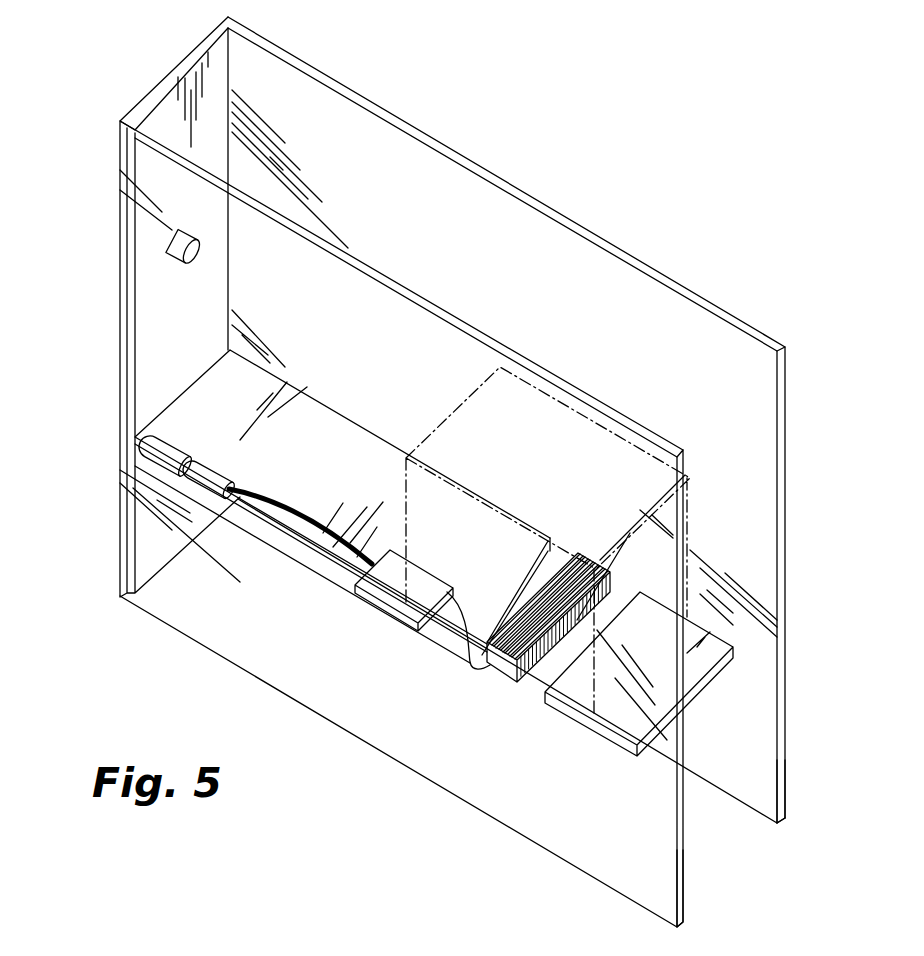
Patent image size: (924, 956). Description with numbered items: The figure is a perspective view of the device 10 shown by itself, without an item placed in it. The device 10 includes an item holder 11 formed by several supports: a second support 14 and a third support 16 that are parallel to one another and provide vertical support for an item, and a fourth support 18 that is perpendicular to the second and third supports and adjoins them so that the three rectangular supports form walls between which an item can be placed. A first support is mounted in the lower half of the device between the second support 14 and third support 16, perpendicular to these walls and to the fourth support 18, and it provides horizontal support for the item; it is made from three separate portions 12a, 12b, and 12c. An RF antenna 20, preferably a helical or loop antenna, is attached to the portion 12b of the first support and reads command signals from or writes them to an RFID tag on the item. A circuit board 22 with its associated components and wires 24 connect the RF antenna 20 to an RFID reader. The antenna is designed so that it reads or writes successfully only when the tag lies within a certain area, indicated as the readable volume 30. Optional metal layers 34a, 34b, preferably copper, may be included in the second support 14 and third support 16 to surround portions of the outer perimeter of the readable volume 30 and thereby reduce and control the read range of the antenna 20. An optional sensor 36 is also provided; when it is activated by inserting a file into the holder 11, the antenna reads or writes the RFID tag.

The device 10 is at (791, 517).
The item holder 11 is at (622, 255).
The first support portion 12a is at (293, 543).
The first support portion 12b is at (503, 675).
The first support portion 12c is at (603, 729).
The second support 14 is at (372, 288).
The third support 16 is at (482, 190).
The fourth support 18 is at (176, 75).
The RF antenna 20 is at (523, 676).
The circuit board 22 is at (383, 597).
The wires 24 is at (295, 514).
The readable volume 30 is at (688, 514).
The metal layer 34a is at (684, 859).
The metal layer 34b is at (786, 771).
The sensor 36 is at (187, 237).